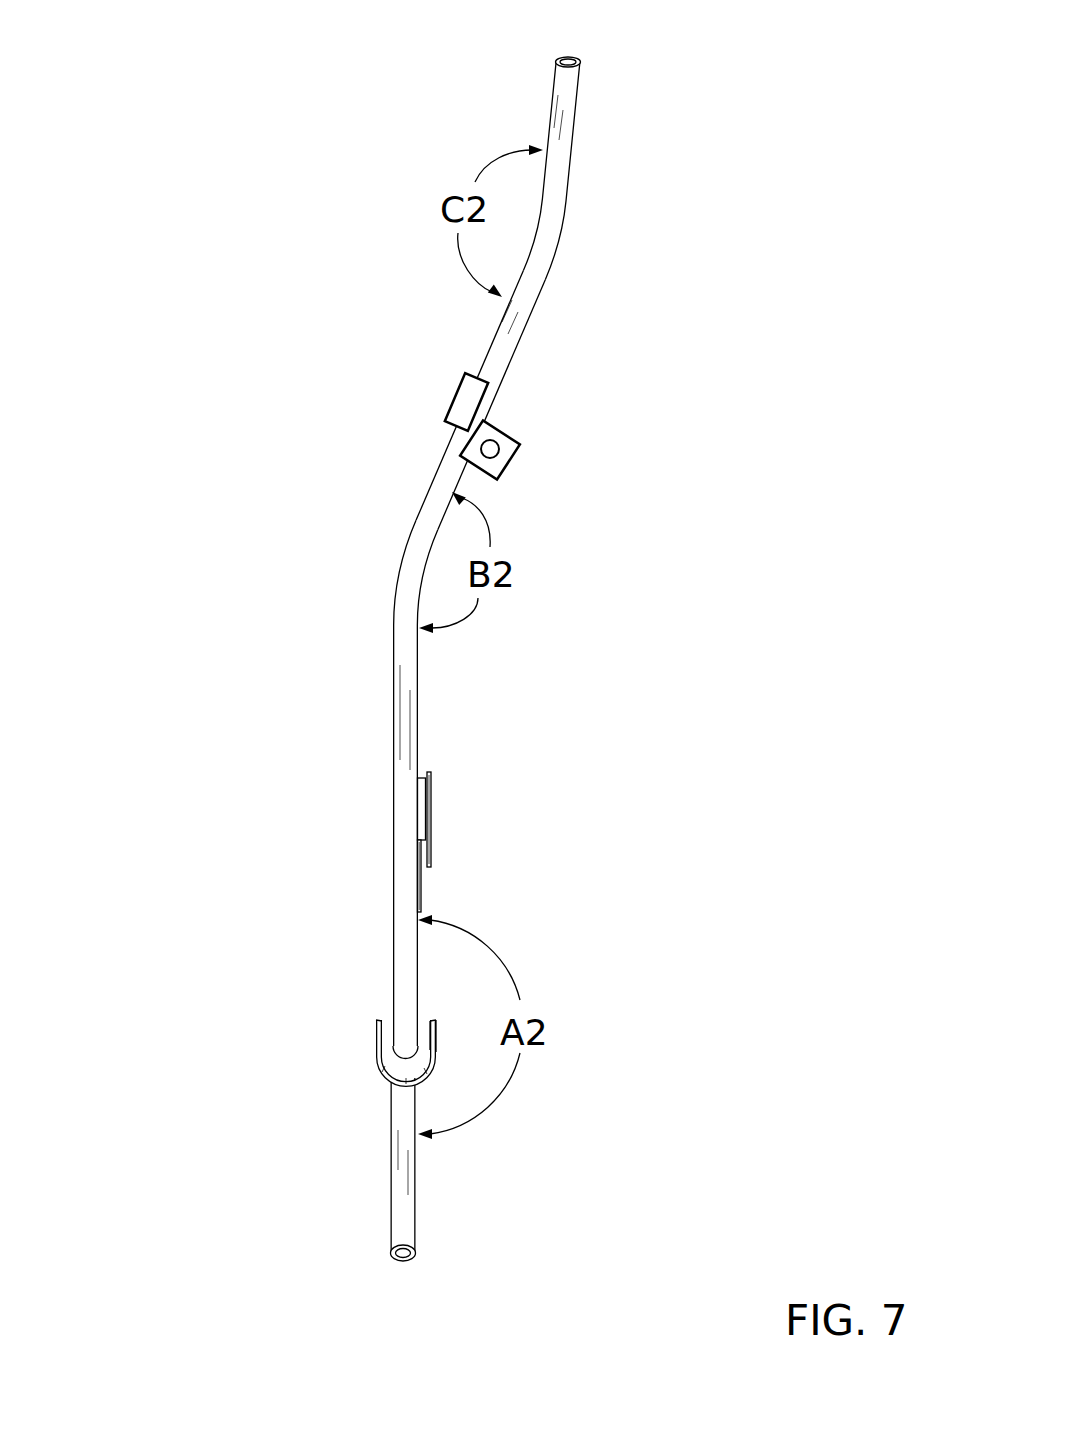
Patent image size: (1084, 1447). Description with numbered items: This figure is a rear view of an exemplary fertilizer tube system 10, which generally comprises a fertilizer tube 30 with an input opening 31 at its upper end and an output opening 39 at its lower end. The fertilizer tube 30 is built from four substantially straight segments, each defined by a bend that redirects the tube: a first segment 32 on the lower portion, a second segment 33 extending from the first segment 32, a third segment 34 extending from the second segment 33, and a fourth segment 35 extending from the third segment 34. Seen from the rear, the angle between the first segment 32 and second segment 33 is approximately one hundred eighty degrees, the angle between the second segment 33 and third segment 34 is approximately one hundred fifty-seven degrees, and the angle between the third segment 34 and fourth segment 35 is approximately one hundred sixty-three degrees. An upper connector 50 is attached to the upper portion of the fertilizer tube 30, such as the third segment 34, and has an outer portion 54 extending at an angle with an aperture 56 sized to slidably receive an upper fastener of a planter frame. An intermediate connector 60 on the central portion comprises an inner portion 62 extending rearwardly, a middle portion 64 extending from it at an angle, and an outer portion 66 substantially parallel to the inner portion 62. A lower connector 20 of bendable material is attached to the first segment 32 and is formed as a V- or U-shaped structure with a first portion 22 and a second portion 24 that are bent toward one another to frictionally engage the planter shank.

The fertilizer tube system 10 is at (176, 176).
The lower connector 20 is at (360, 1056).
The first portion 22 is at (440, 1032).
The second portion 24 is at (382, 1067).
The fertilizer tube 30 is at (382, 621).
The input opening 31 is at (569, 57).
The first segment 32 is at (417, 1168).
The second segment 33 is at (418, 702).
The third segment 34 is at (527, 313).
The fourth segment 35 is at (575, 125).
The output opening 39 is at (406, 1262).
The upper connector 50 is at (572, 443).
The outer portion 54 is at (508, 440).
The aperture 56 is at (513, 457).
The intermediate connector 60 is at (454, 828).
The inner portion 62 is at (420, 876).
The middle portion 64 is at (422, 807).
The outer portion 66 is at (432, 792).